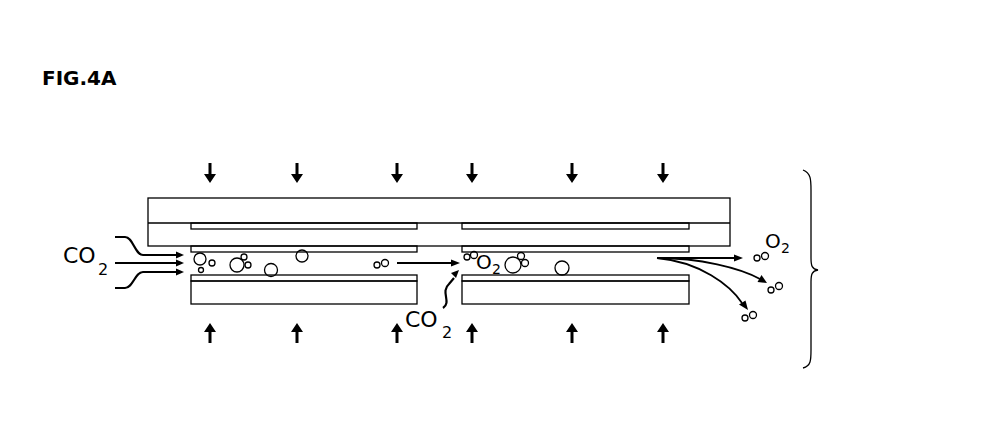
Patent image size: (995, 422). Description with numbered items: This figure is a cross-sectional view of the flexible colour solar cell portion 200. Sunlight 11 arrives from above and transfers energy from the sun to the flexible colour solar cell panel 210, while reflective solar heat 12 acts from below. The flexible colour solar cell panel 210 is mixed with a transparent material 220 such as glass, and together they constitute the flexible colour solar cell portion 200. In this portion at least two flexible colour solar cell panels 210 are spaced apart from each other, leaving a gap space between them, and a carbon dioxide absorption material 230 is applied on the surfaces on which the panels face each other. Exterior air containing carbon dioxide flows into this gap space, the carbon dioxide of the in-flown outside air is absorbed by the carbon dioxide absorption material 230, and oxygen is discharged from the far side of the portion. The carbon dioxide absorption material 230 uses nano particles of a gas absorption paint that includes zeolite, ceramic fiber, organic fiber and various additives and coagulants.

The sunlight 11 is at (467, 170).
The reflective solar heat 12 is at (475, 338).
The flexible colour solar cell portion 200 is at (834, 269).
The flexible colour solar cell panel 210 is at (160, 230).
The transparent material 220 is at (245, 295).
The carbon dioxide absorption material 230 is at (633, 252).